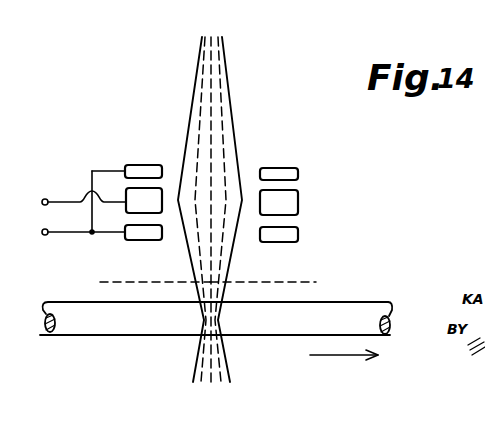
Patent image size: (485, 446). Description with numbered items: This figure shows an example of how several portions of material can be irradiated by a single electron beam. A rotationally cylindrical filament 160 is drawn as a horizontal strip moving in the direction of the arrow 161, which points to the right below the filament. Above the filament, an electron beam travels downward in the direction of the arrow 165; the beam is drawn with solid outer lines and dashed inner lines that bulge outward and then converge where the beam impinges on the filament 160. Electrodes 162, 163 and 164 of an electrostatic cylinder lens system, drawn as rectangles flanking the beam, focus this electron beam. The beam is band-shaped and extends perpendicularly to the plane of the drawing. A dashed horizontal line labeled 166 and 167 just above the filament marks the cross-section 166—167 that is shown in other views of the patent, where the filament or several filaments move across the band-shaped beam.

The rotationally cylindrical filament 160 is at (99, 333).
The arrow 161 is at (335, 357).
The electrode 162 is at (291, 210).
The electrode 163 is at (298, 174).
The electrode 164 is at (298, 235).
The arrow 165 is at (252, 92).
The cross-section line 166 is at (137, 282).
The cross-section line 167 is at (281, 282).